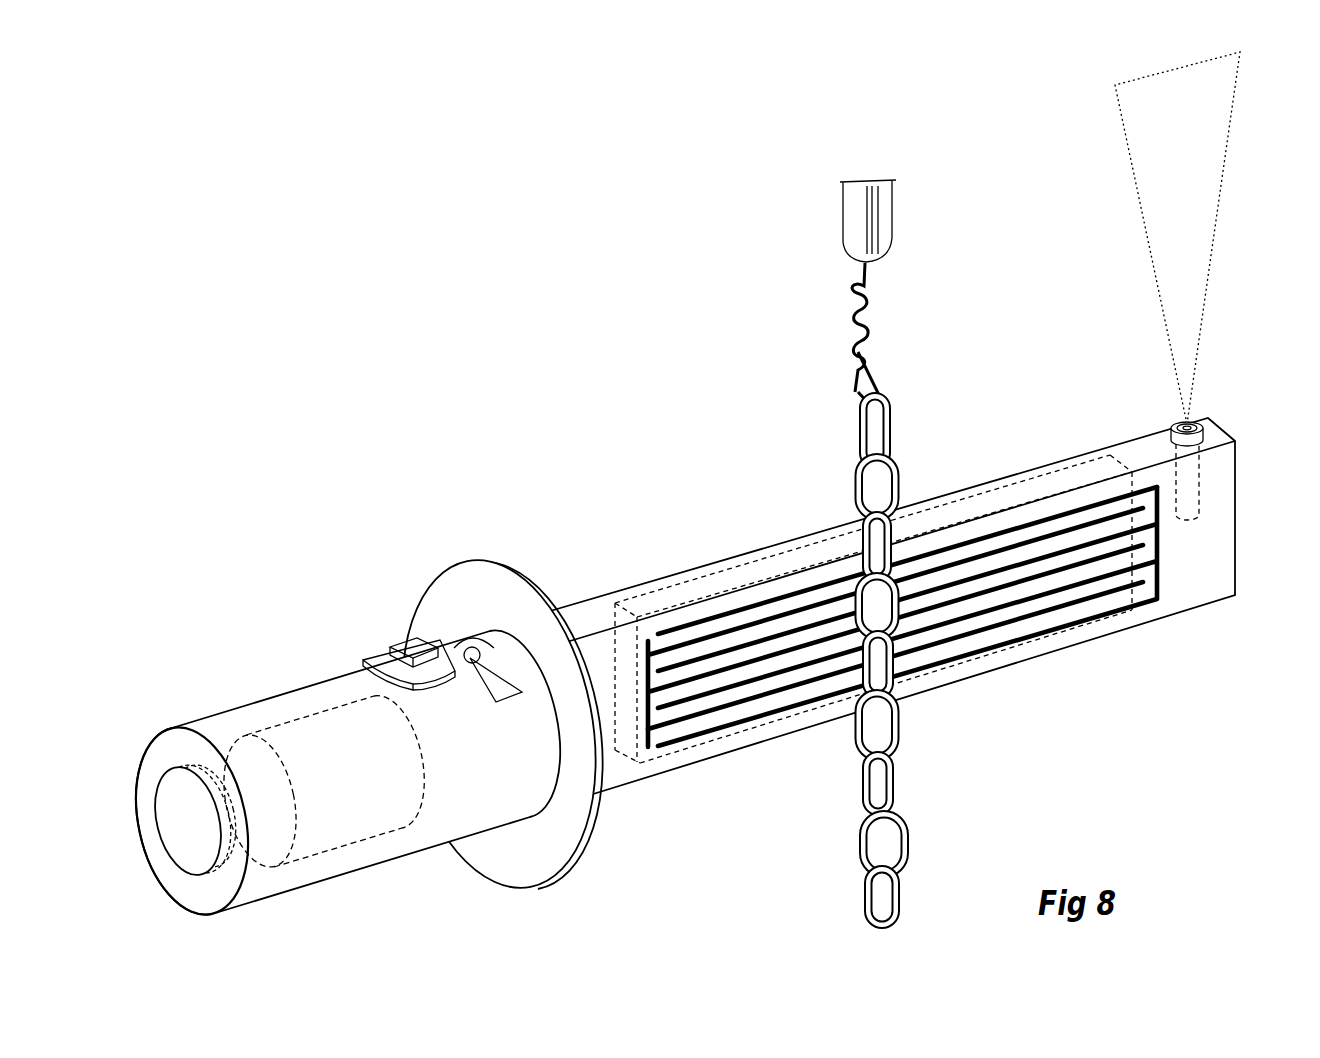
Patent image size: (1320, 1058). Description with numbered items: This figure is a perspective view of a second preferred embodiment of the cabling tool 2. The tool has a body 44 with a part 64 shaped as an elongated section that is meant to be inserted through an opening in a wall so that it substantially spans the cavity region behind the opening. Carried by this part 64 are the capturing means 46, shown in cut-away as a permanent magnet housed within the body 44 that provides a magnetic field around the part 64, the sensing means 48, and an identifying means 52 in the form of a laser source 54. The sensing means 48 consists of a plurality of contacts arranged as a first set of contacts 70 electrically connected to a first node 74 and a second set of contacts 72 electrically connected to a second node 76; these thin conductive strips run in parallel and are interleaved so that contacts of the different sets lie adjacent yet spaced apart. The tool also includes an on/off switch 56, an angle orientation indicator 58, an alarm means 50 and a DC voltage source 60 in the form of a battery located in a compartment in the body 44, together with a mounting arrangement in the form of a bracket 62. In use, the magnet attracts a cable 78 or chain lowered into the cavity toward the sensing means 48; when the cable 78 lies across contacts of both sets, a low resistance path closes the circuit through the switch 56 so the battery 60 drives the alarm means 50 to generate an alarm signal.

The cabling tool 2 is at (523, 469).
The body 44 is at (716, 763).
The capturing means 46 is at (977, 487).
The sensing means 48 is at (956, 661).
The alarm means 50 is at (168, 828).
The identifying means 52 is at (1213, 409).
The laser source 54 is at (1204, 437).
The on/off switch 56 is at (407, 643).
The angle orientation indicator 58 is at (490, 666).
The DC voltage source 60 is at (367, 827).
The bracket 62 is at (520, 580).
The part of the body 64 is at (1002, 676).
The first set of contacts 70 is at (714, 637).
The second set of contacts 72 is at (1077, 598).
The first node 74 is at (879, 672).
The second node 76 is at (977, 616).
The cable 78 is at (906, 846).